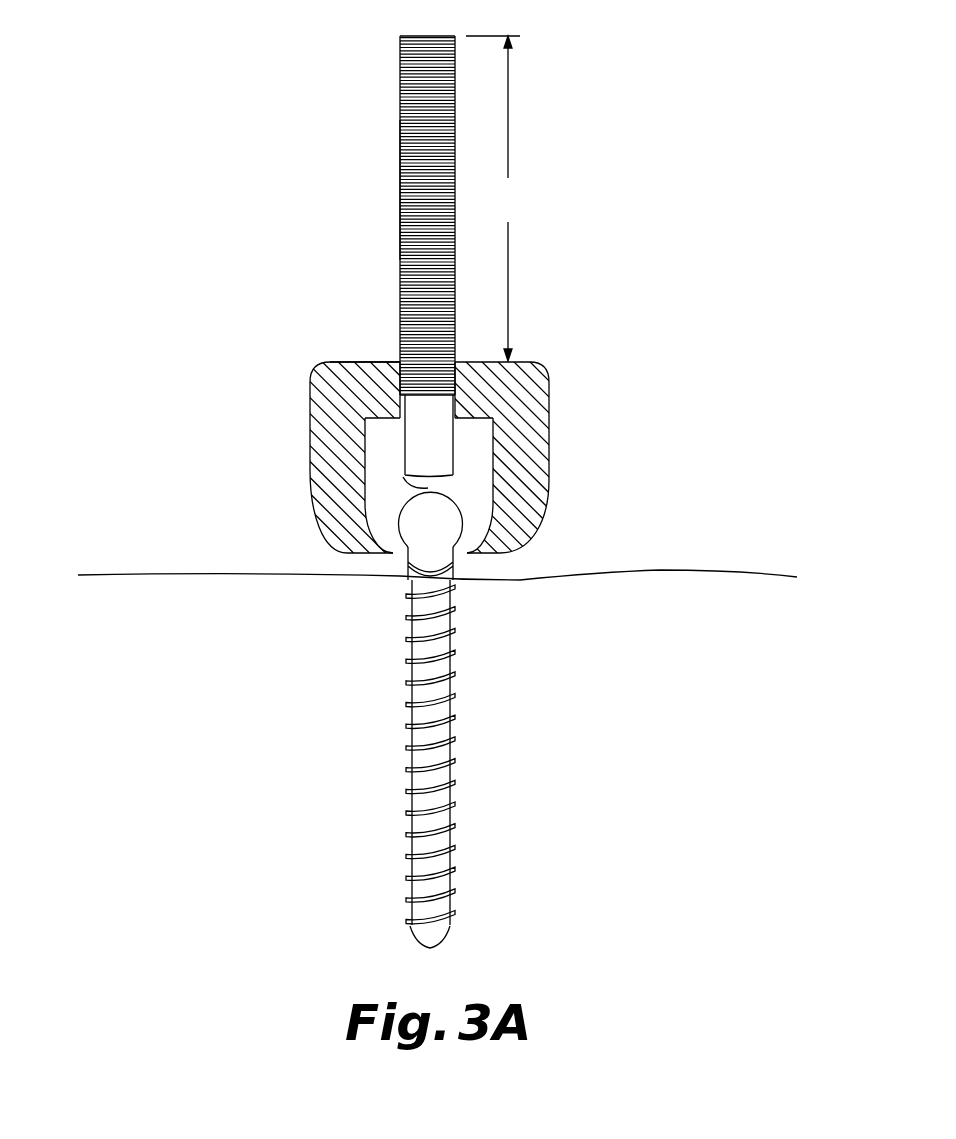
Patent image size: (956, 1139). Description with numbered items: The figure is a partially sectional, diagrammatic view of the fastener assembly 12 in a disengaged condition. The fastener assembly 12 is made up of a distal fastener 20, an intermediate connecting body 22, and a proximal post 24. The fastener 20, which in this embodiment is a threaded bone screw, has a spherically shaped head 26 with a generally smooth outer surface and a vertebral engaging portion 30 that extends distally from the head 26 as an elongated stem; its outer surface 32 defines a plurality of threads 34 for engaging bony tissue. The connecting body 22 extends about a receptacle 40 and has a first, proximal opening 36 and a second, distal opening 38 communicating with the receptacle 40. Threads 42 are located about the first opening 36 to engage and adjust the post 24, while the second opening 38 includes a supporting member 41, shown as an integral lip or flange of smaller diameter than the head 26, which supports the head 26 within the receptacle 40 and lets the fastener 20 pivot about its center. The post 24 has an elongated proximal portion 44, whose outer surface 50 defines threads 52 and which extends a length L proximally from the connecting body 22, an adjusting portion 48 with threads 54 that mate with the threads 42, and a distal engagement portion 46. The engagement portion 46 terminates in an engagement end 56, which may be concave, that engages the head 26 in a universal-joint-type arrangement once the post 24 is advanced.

The fastener assembly 12 is at (238, 355).
The fastener 20 is at (498, 764).
The connecting body 22 is at (460, 460).
The post 24 is at (425, 245).
The head 26 is at (413, 518).
The vertebral engaging portion 30 is at (456, 713).
The outer surface 32 is at (457, 877).
The threads 34 is at (457, 800).
The first opening 36 is at (399, 380).
The second opening 38 is at (403, 568).
The receptacle 40 is at (375, 456).
The supporting member 41 is at (462, 560).
The threads 42 is at (536, 380).
The proximal portion 44 is at (399, 47).
The engagement portion 46 is at (443, 448).
The adjusting portion 48 is at (461, 374).
The outer surface 50 is at (424, 174).
The threads 52 is at (398, 186).
The threads 54 is at (404, 381).
The engagement end 56 is at (372, 500).